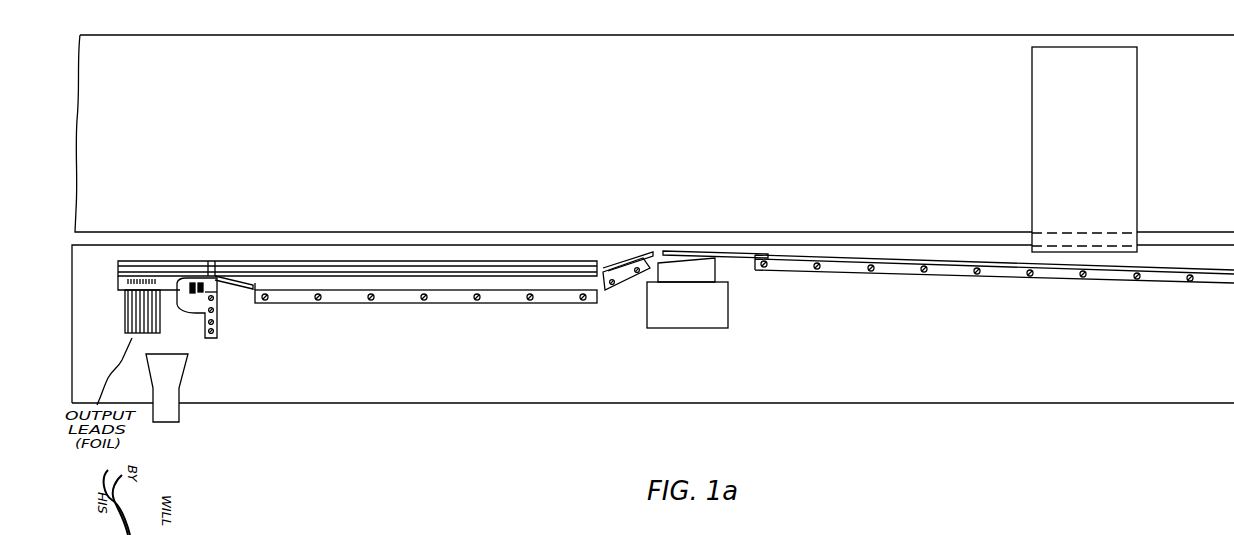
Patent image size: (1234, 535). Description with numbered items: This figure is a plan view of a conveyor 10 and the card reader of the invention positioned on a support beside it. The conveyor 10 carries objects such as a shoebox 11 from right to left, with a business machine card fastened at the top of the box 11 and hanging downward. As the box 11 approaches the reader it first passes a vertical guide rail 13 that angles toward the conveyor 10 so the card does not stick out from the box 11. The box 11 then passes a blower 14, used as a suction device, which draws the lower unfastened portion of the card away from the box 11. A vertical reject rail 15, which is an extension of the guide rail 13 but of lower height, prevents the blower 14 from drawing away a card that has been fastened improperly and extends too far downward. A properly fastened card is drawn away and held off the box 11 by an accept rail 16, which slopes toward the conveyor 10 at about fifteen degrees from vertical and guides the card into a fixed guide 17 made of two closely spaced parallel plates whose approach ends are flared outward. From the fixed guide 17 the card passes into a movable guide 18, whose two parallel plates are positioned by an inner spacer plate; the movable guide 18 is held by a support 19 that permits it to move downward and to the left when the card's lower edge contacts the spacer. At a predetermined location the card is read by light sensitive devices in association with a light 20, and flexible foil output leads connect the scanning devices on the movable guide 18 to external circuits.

The conveyor 10 is at (556, 126).
The shoebox 11 is at (1142, 118).
The guide rail 13 is at (1012, 276).
The blower 14 is at (732, 305).
The reject rail 15 is at (717, 215).
The accept rail 16 is at (613, 292).
The fixed guide 17 is at (397, 276).
The movable guide 18 is at (207, 215).
The support 19 is at (190, 315).
The light 20 is at (185, 410).